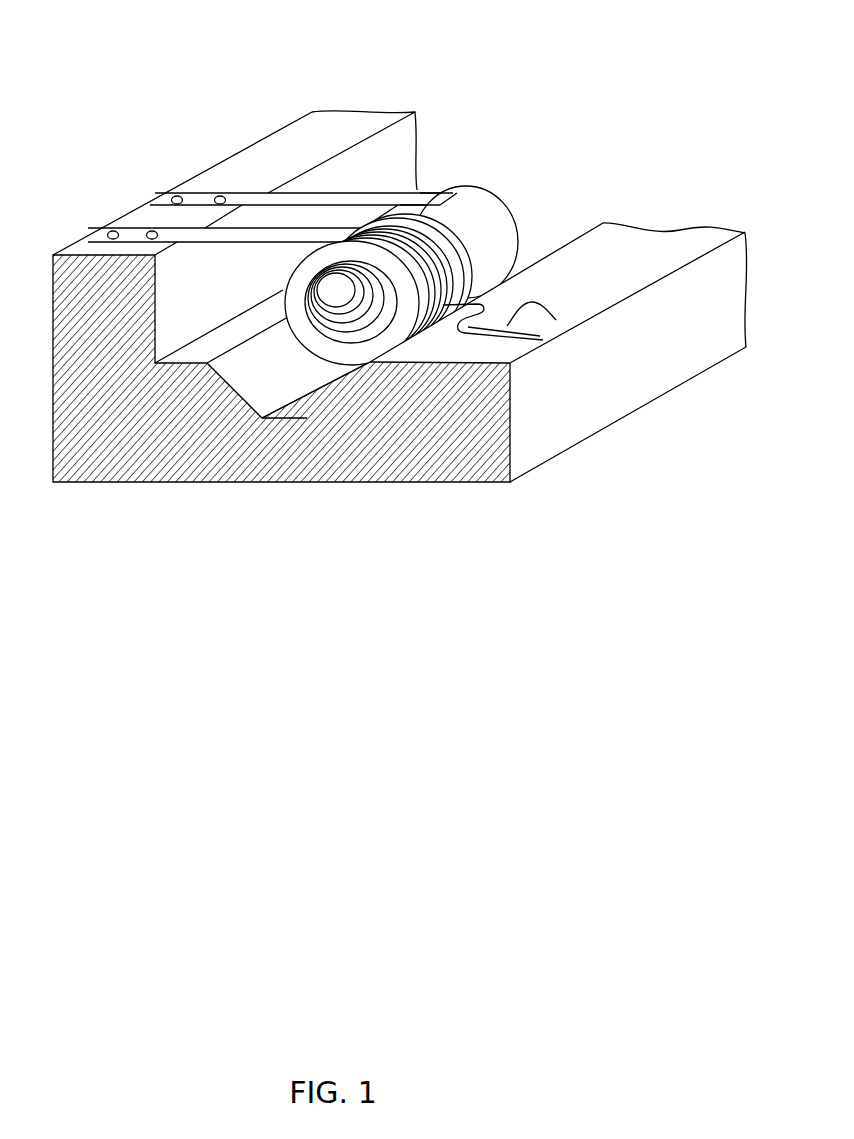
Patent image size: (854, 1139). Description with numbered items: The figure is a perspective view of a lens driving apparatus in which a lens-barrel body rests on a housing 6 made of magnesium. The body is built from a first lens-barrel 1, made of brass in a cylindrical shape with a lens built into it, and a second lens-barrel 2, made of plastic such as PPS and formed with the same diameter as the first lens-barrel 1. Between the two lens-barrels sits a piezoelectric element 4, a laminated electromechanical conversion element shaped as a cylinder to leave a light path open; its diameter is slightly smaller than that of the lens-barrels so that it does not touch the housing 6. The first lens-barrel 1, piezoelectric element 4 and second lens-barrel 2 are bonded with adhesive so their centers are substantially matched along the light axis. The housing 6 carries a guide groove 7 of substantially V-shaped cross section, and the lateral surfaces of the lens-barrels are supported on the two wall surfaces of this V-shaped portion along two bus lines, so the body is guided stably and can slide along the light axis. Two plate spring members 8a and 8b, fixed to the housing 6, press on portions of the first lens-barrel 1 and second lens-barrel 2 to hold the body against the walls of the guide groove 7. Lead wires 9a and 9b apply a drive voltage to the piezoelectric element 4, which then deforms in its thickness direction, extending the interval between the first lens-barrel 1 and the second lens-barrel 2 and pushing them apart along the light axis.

The first lens-barrel 1 is at (482, 215).
The second lens-barrel 2 is at (333, 355).
The piezoelectric element 4 is at (450, 260).
The housing 6 is at (650, 370).
The guide groove 7 is at (268, 388).
The plate spring member 8a is at (270, 236).
The plate spring member 8b is at (355, 202).
The lead wire 9a is at (466, 333).
The lead wire 9b is at (556, 320).